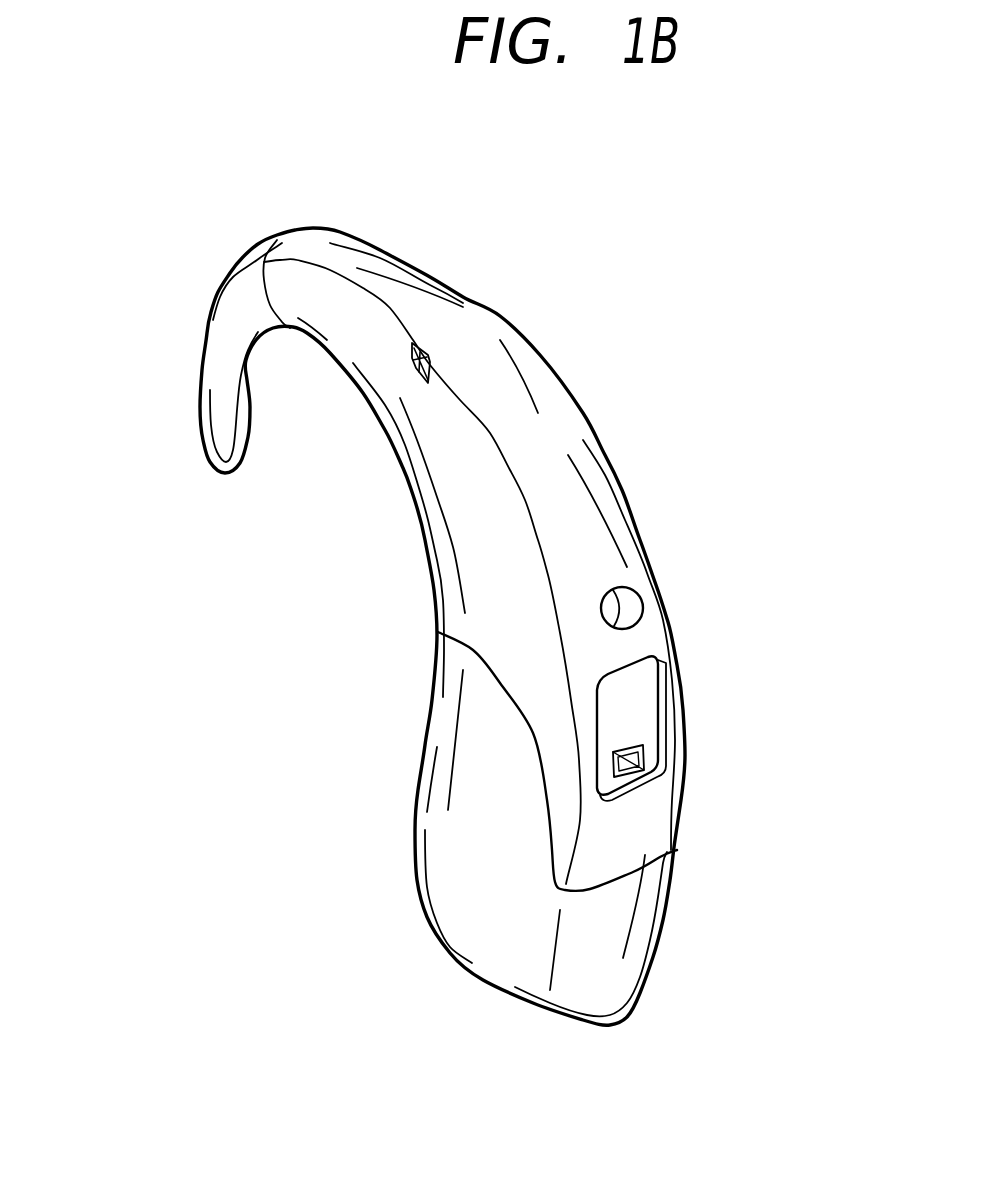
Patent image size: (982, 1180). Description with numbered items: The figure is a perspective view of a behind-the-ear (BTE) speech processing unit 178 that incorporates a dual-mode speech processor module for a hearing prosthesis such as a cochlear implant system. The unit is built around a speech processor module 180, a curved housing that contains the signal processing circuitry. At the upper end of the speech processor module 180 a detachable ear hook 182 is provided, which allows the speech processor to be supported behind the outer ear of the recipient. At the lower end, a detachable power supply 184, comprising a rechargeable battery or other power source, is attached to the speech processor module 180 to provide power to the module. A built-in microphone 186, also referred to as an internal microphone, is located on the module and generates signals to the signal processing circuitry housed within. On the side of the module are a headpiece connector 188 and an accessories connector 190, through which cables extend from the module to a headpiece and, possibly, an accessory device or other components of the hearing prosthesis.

The behind-the-ear speech processing unit 178 is at (266, 641).
The speech processor module 180 is at (644, 521).
The detachable ear hook 182 is at (206, 337).
The detachable power supply 184 is at (421, 782).
The built-in microphone 186 is at (430, 352).
The headpiece connector 188 is at (612, 607).
The accessories connector 190 is at (637, 759).